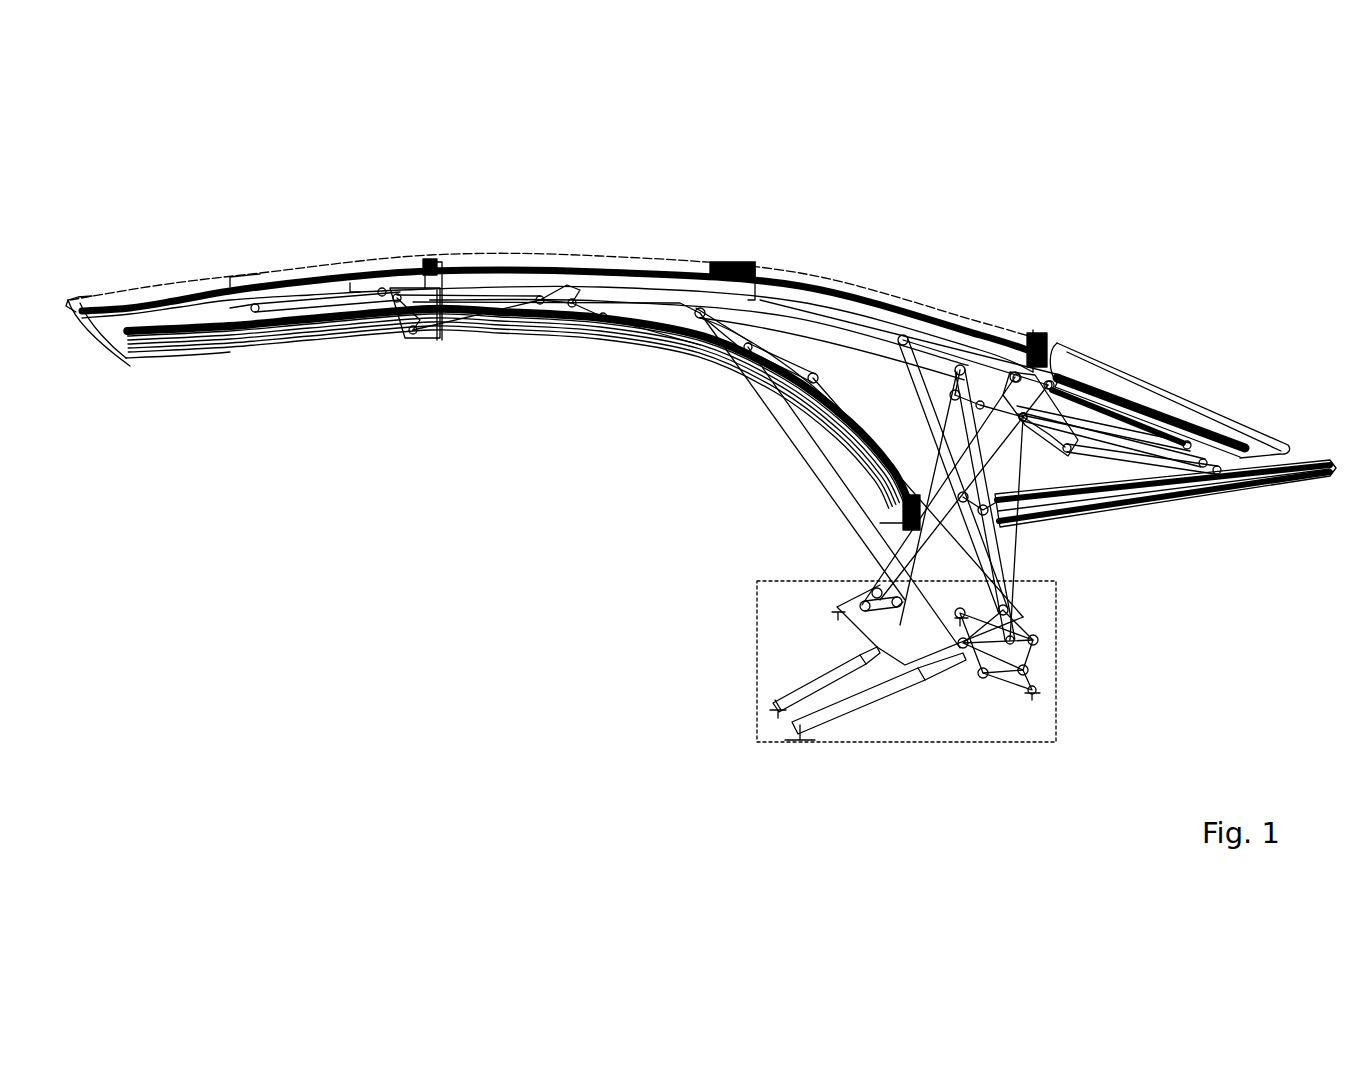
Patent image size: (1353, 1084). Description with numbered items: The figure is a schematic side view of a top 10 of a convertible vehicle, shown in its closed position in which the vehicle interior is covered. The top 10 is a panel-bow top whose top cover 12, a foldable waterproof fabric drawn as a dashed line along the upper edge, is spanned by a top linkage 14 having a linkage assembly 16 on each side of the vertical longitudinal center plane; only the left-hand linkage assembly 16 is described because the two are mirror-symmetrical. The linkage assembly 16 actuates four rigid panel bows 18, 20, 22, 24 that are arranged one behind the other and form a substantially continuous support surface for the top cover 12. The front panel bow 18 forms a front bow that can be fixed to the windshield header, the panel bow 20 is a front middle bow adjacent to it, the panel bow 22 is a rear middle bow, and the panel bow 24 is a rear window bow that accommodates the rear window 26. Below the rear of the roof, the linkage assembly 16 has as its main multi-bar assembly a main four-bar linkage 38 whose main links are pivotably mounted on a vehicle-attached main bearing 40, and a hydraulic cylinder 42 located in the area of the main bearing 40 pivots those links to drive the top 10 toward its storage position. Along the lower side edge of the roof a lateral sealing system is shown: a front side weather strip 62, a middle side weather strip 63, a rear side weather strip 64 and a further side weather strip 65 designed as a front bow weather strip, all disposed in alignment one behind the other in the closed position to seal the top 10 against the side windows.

The top 10 is at (701, 484).
The top cover 12 is at (273, 268).
The top linkage 14 is at (594, 373).
The linkage assembly 16 is at (645, 379).
The panel bow 18 is at (168, 295).
The panel bow 20 is at (503, 265).
The panel bow 22 is at (840, 297).
The panel bow 24 is at (1075, 375).
The rear window 26 is at (1195, 412).
The main four-bar linkage 38 is at (841, 497).
The main bearing 40 is at (957, 702).
The hydraulic cylinder 42 is at (800, 725).
The side weather strip 62 is at (392, 335).
The middle side weather strip 63 is at (524, 350).
The rear side weather strip 64 is at (762, 408).
The side weather strip 65 is at (205, 348).